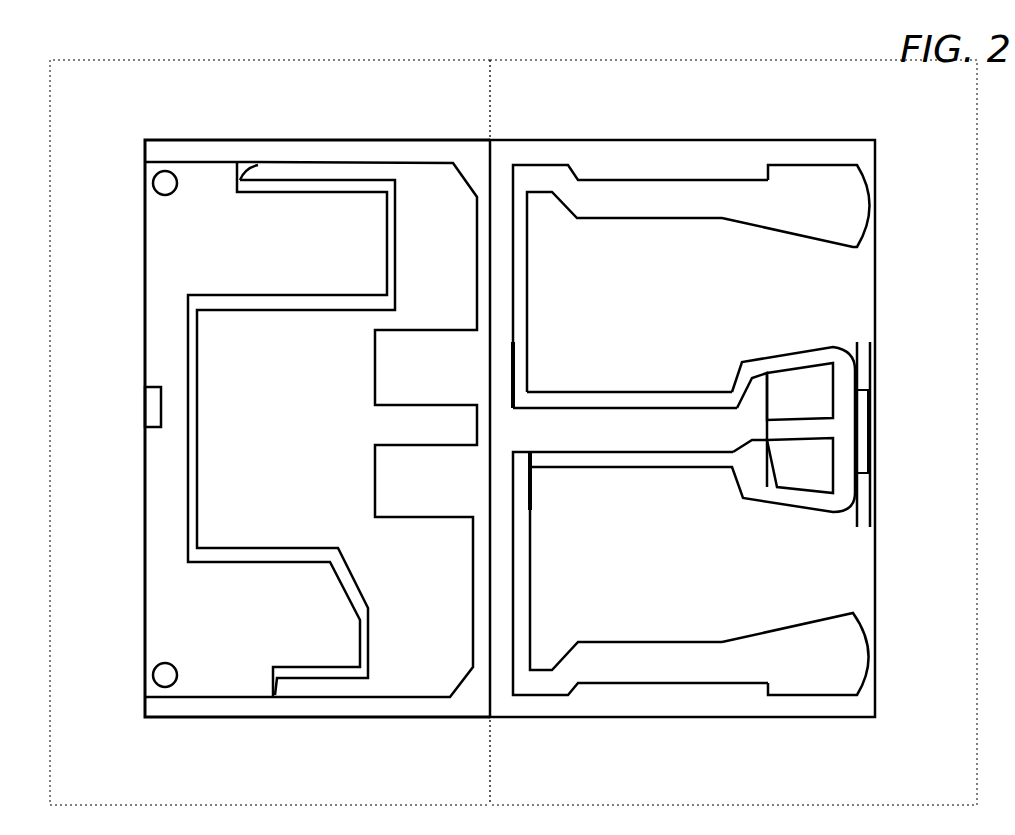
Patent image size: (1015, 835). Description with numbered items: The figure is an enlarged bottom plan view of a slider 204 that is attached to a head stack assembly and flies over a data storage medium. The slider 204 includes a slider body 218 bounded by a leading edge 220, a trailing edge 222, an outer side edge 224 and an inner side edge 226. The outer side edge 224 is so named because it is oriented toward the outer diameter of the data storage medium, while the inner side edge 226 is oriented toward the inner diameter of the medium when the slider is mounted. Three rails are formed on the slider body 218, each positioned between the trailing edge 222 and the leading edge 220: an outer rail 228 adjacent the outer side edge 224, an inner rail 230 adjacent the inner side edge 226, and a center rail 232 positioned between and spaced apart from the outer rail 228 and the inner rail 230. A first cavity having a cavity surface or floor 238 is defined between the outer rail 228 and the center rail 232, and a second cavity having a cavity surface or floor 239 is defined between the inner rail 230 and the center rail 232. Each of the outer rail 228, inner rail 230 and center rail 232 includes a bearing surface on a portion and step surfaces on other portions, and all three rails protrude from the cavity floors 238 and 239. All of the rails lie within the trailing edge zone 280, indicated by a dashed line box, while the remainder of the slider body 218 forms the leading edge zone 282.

The slider 204 is at (862, 120).
The slider body 218 is at (143, 508).
The leading edge 220 is at (143, 350).
The trailing edge 222 is at (880, 432).
The outer side edge 224 is at (487, 140).
The inner side edge 226 is at (410, 717).
The outer rail 228 is at (793, 197).
The inner rail 230 is at (725, 668).
The center rail 232 is at (655, 392).
The cavity surface or floor 238 is at (670, 286).
The cavity surface or floor 239 is at (684, 564).
The trailing edge zone 280 is at (733, 432).
The leading edge zone 282 is at (270, 432).